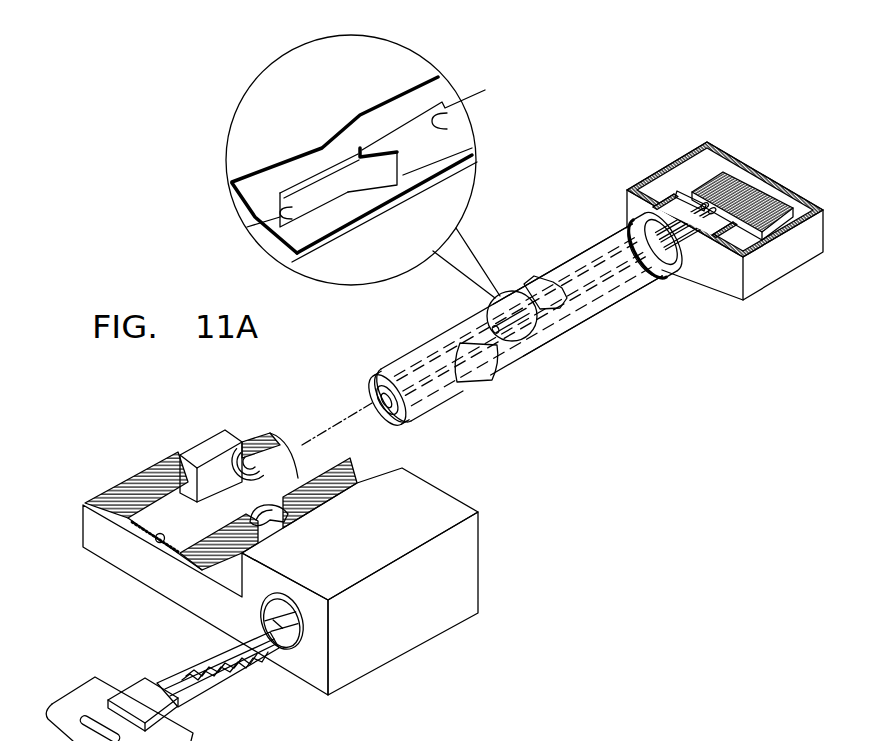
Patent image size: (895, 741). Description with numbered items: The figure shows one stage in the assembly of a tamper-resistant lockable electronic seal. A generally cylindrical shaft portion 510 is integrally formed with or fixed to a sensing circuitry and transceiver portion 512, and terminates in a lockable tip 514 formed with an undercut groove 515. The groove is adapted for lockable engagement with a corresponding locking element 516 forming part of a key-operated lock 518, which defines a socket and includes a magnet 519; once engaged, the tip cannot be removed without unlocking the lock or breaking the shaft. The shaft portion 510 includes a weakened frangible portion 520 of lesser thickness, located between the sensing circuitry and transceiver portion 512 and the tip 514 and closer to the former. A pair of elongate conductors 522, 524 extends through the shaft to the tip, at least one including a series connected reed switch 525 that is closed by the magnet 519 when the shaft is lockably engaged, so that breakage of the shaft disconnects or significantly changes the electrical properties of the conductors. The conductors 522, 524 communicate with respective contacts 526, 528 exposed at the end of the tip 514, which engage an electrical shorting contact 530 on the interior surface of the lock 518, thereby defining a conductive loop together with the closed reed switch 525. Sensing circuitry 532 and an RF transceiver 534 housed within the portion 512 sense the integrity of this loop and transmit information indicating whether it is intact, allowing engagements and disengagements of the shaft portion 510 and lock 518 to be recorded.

The shaft portion 510 is at (563, 228).
The sensing circuitry and transceiver portion 512 is at (780, 282).
The lockable tip 514 is at (469, 415).
The undercut groove 515 is at (485, 380).
The locking element 516 is at (262, 520).
The lock 518 is at (388, 649).
The magnet 519 is at (207, 432).
The weakened frangible portion 520 is at (663, 273).
The elongate conductor 522 is at (665, 212).
The elongate conductor 524 is at (710, 240).
The reed switch 525 is at (401, 80).
The contact 526 is at (368, 392).
The contact 528 is at (391, 421).
The electrical shorting contact 530 is at (153, 540).
The sensing circuitry 532 is at (688, 198).
The RF transceiver 534 is at (733, 186).